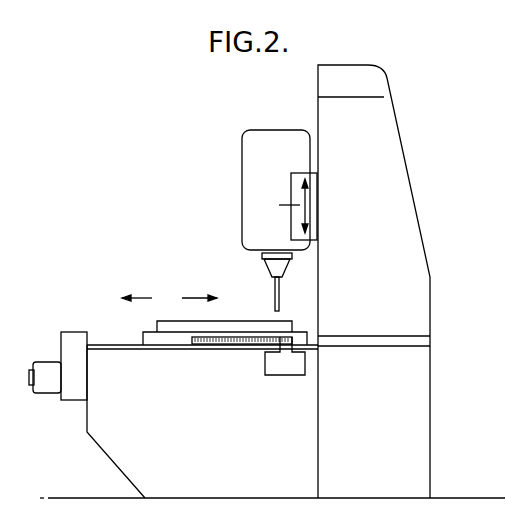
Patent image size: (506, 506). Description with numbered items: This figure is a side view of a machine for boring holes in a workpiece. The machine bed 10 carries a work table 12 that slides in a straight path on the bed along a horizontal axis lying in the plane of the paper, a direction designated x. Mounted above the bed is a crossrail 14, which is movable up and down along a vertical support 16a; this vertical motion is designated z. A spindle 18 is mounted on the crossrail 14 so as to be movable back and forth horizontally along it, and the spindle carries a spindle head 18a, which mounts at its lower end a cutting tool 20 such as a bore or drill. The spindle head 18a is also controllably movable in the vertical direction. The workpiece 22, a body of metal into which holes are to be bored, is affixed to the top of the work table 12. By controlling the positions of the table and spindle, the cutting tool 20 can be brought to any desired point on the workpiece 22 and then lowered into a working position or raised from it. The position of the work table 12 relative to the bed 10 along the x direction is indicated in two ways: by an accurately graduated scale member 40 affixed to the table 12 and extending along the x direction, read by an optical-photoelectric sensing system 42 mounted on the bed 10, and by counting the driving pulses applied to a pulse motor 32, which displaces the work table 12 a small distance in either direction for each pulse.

The machine bed 10 is at (98, 419).
The work table 12 is at (143, 334).
The crossrail 14 is at (317, 214).
The vertical support 16a is at (388, 146).
The spindle 18 is at (285, 161).
The spindle head 18a is at (263, 262).
The cutting tool 20 is at (274, 290).
The workpiece 22 is at (279, 318).
The pulse motor 32 is at (47, 365).
The scale member 40 is at (232, 348).
The optical-photoelectric sensing system 42 is at (285, 372).